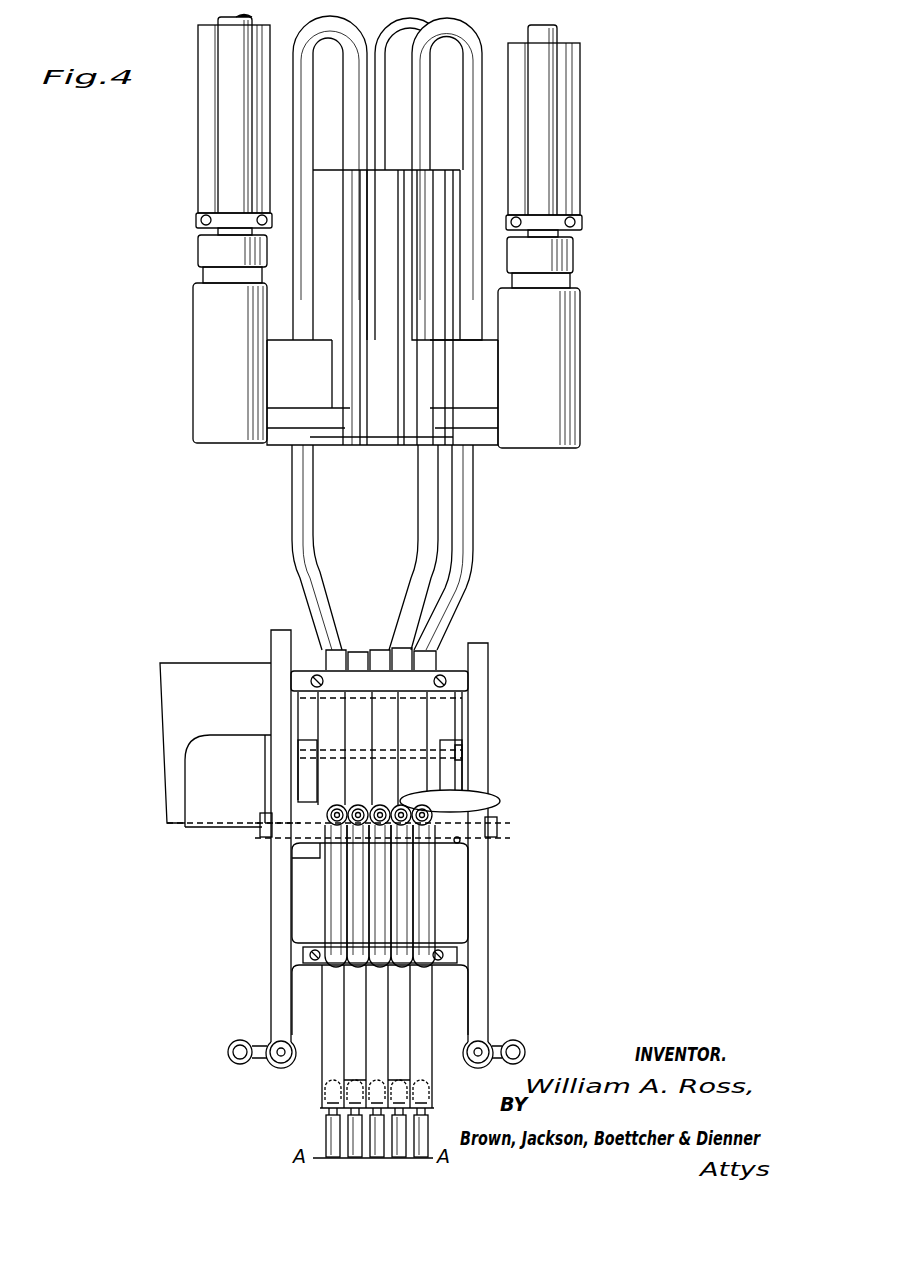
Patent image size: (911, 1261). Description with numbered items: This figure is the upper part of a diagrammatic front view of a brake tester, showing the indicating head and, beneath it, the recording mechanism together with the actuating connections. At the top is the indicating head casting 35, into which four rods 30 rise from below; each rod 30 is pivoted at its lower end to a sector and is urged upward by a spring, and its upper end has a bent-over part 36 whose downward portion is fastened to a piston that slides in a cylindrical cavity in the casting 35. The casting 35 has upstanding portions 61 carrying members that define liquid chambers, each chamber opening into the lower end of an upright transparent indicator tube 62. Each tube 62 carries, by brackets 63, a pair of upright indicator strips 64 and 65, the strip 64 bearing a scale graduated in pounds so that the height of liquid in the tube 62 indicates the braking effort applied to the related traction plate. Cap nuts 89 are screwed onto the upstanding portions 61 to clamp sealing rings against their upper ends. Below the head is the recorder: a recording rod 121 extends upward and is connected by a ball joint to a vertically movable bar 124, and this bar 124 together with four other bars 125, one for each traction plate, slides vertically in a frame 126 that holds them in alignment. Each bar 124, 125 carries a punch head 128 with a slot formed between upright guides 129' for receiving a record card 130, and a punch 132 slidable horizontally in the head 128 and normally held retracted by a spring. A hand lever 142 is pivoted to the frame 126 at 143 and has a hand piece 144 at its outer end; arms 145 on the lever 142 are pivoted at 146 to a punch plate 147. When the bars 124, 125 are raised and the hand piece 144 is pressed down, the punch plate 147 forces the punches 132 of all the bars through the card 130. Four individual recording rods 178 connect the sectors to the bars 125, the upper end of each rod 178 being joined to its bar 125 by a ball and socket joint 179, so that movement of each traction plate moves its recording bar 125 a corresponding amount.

The rod 30 is at (314, 572).
The indicating head casting 35 is at (283, 397).
The bent-over part 36 is at (318, 30).
The upstanding portion 61 is at (196, 357).
The indicator tube 62 is at (232, 178).
The bracket 63 is at (548, 223).
The indicator strip 64 is at (262, 148).
The indicator strip 65 is at (200, 112).
The cap nut 89 is at (208, 252).
The recording rod 121 is at (378, 1131).
The vertically movable bar 124 is at (378, 1058).
The bar 125 is at (355, 1006).
The frame 126 is at (278, 937).
The punch head 128 is at (360, 906).
The upright guide 129' is at (202, 781).
The record card 130 is at (192, 673).
The punch 132 is at (380, 805).
The hand lever 142 is at (460, 841).
The pivot 143 is at (497, 826).
The hand piece 144 is at (470, 797).
The arm 145 is at (305, 773).
The pivot 146 is at (462, 752).
The punch plate 147 is at (318, 716).
The recording rod 178 is at (352, 1139).
The ball and socket joint 179 is at (322, 1093).